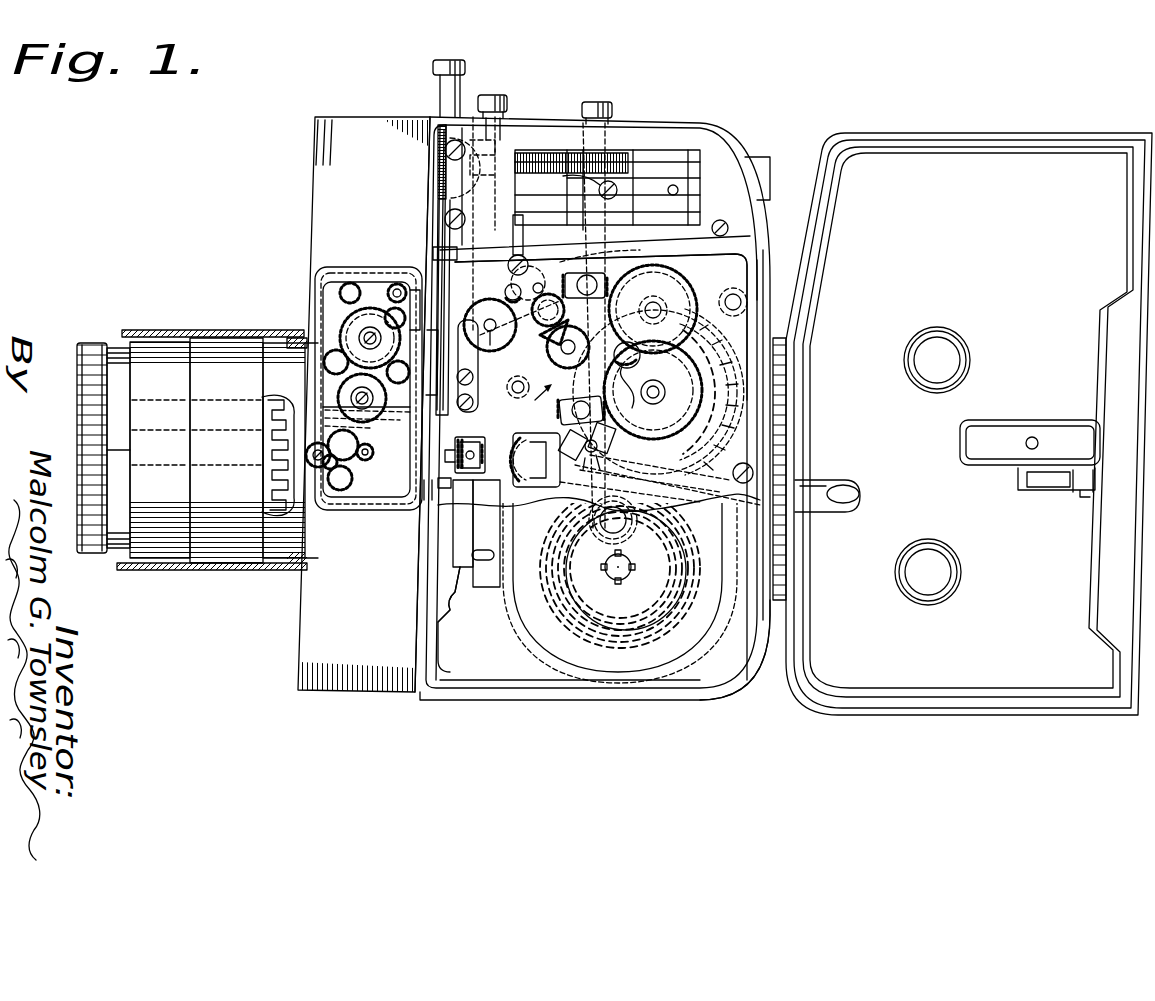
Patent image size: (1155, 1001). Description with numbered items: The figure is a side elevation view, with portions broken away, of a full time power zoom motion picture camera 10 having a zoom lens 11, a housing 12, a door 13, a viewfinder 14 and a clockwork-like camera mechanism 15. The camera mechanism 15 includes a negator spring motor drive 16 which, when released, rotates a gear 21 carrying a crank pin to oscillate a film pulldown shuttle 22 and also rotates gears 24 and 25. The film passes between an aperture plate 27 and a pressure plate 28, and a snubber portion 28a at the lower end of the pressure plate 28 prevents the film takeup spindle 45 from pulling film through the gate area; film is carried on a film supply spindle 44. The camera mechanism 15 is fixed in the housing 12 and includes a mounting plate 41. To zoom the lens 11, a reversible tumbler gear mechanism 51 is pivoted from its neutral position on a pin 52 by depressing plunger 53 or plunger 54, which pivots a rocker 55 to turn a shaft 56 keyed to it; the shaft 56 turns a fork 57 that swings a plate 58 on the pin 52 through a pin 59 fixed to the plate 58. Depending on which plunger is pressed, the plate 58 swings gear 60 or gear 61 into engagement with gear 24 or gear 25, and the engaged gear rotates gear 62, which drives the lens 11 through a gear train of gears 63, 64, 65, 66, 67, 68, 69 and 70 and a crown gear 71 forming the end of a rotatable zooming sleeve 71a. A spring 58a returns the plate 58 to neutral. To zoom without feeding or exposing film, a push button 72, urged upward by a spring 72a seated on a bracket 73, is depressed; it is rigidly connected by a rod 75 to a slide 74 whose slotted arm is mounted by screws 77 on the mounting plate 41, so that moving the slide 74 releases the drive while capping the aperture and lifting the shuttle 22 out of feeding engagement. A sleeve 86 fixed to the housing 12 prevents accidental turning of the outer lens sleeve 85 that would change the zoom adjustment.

The motion picture camera 10 is at (724, 713).
The zoom lens 11 is at (205, 574).
The housing 12 is at (748, 668).
The door 13 is at (955, 668).
The viewfinder 14 is at (644, 193).
The camera mechanism 15 is at (748, 252).
The negator spring motor drive 16 is at (788, 387).
The gear 21 is at (466, 470).
The shuttle 22 is at (414, 494).
The gear 24 is at (740, 348).
The gear 25 is at (683, 269).
The aperture plate 27 is at (430, 490).
The pressure plate 28 is at (445, 486).
The snubber portion 28a is at (460, 580).
The mounting plate 41 is at (760, 276).
The film supply spindle 44 is at (658, 392).
The film takeup spindle 45 is at (629, 571).
The reversible tumbler gear mechanism 51 is at (535, 435).
The pin 52 is at (568, 350).
The plunger 53 is at (502, 96).
The plunger 54 is at (606, 101).
The rocker 55 is at (455, 244).
The shaft 56 is at (521, 294).
The fork 57 is at (562, 347).
The plate 58 is at (628, 246).
The spring 58a is at (587, 455).
The pin 59 is at (491, 329).
The gear 60 is at (572, 415).
The gear 61 is at (585, 306).
The gear 62 is at (474, 404).
The gear 63 is at (433, 260).
The gear 64 is at (482, 384).
The gear 65 is at (425, 292).
The gear 66 is at (375, 276).
The gear 67 is at (330, 276).
The gear 68 is at (348, 330).
The gear 69 is at (358, 439).
The gear 70 is at (352, 474).
The crown gear 71 is at (268, 504).
The zooming sleeve 71a is at (268, 440).
The push button 72 is at (438, 82).
The spring 72a is at (491, 118).
The bracket 73 is at (466, 186).
The slide 74 is at (455, 258).
The rod 75 is at (430, 196).
The screws 77 is at (470, 413).
The outer lens sleeve 85 is at (150, 356).
The sleeve 86 is at (206, 338).